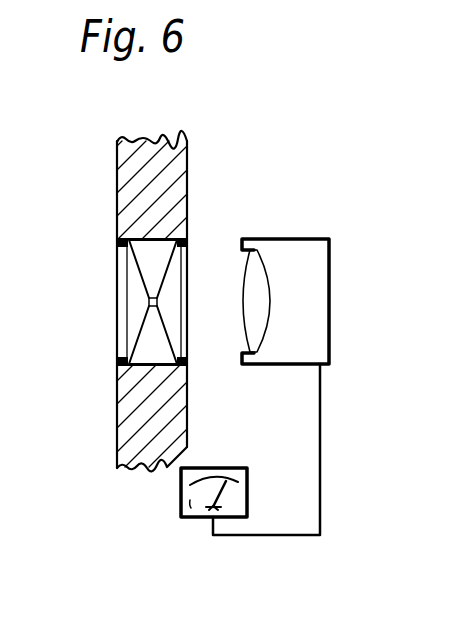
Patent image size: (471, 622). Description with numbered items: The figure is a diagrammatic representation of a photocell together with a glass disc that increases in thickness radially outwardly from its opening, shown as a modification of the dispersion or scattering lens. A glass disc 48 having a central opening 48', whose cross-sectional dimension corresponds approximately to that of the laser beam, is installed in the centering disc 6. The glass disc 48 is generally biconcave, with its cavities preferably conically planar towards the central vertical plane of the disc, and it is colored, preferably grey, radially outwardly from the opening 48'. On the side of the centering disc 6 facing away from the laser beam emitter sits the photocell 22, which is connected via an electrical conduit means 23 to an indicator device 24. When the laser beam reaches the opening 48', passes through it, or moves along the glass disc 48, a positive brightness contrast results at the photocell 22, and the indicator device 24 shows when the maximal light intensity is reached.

The centering disc 6 is at (166, 179).
The glass disc 48 is at (108, 302).
The central opening 48' is at (99, 333).
The photocell 22 is at (305, 313).
The electrical conduit means 23 is at (320, 463).
The indicator device 24 is at (181, 519).